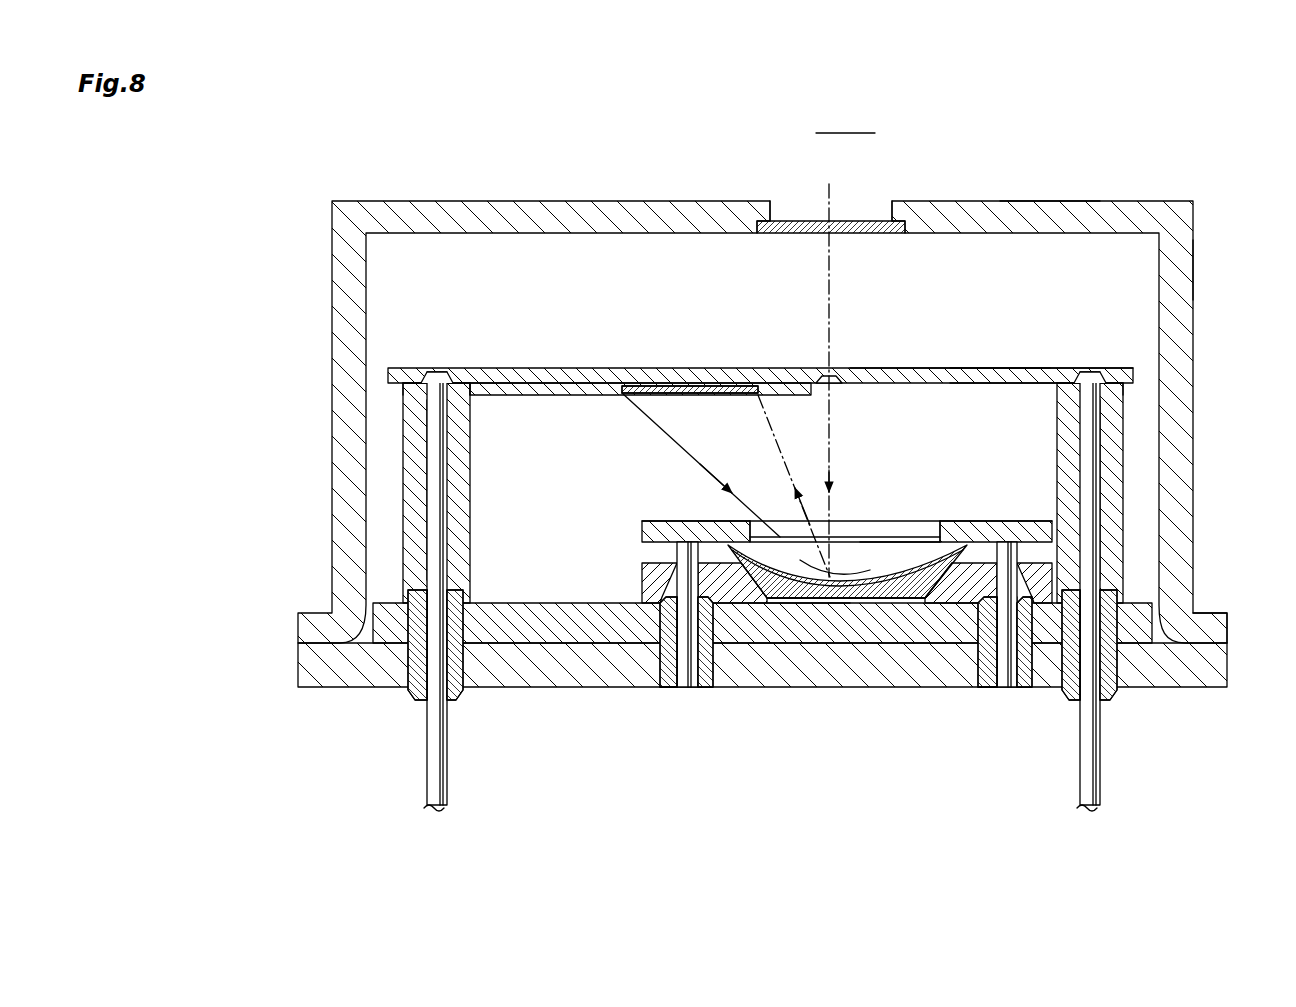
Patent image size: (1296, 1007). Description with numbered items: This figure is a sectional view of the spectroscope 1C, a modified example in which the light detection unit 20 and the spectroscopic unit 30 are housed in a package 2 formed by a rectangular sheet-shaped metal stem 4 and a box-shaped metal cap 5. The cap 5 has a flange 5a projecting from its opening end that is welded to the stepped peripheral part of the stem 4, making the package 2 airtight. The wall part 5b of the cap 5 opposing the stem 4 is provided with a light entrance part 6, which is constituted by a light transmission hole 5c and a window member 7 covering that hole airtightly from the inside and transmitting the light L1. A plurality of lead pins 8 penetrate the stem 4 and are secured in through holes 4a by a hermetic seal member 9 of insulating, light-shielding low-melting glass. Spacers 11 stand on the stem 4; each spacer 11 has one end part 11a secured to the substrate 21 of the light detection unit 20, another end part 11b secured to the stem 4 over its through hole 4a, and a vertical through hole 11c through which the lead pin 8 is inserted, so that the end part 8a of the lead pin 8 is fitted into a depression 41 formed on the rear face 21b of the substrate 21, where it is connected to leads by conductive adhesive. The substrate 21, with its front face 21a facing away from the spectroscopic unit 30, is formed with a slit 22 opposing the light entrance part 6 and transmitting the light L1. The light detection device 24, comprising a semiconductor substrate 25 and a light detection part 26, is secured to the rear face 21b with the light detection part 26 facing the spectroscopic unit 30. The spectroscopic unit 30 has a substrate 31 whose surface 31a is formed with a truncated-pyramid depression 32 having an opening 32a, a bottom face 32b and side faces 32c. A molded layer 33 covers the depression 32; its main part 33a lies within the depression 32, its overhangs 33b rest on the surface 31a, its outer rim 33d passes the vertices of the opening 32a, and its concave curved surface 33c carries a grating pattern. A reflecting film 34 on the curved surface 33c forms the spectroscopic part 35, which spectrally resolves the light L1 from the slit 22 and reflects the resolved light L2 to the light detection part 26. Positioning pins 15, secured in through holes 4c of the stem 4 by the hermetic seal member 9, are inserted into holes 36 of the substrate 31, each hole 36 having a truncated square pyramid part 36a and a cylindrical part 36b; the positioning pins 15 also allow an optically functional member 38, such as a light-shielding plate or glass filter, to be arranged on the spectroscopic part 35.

The spectroscope 1C is at (1234, 156).
The package 2 is at (1197, 265).
The stem 4 is at (1160, 688).
The through hole 4a is at (456, 695).
The through hole 4c is at (705, 690).
The cap 5 is at (1120, 201).
The flange 5a is at (1205, 608).
The wall part 5b is at (1040, 201).
The light transmission hole 5c is at (790, 205).
The light entrance part 6 is at (845, 116).
The window member 7 is at (850, 221).
The lead pin 8 is at (437, 800).
The end part 8a is at (437, 372).
The hermetic seal member 9 is at (416, 692).
The spacer 11 is at (405, 485).
The one end part 11a is at (455, 383).
The other end part 11b is at (410, 630).
The through hole 11c is at (432, 505).
The positioning pin 15 is at (668, 690).
The light detection unit 20 is at (385, 376).
The substrate 21 is at (976, 383).
The front face 21a is at (988, 368).
The rear face 21b is at (1000, 383).
The slit 22 is at (840, 384).
The light detection device 24 is at (481, 398).
The semiconductor substrate 25 is at (546, 395).
The light detection part 26 is at (703, 395).
The spectroscopic unit 30 is at (640, 590).
The substrate 31 is at (655, 575).
The surface 31a is at (650, 542).
The depression 32 is at (893, 605).
The opening 32a is at (748, 542).
The bottom face 32b is at (848, 605).
The side face 32c is at (935, 625).
The molded layer 33 is at (782, 572).
The main part 33a is at (822, 592).
The overhang 33b is at (988, 548).
The curved surface 33c is at (935, 560).
The outer rim 33d is at (1010, 575).
The reflecting film 34 is at (905, 565).
The spectroscopic part 35 is at (858, 570).
The hole 36 is at (722, 690).
The truncated square pyramid part 36a is at (663, 685).
The cylindrical part 36b is at (705, 590).
The optically functional member 38 is at (655, 520).
The depression 41 is at (418, 388).
The light L1 is at (838, 436).
The light L2 is at (680, 452).